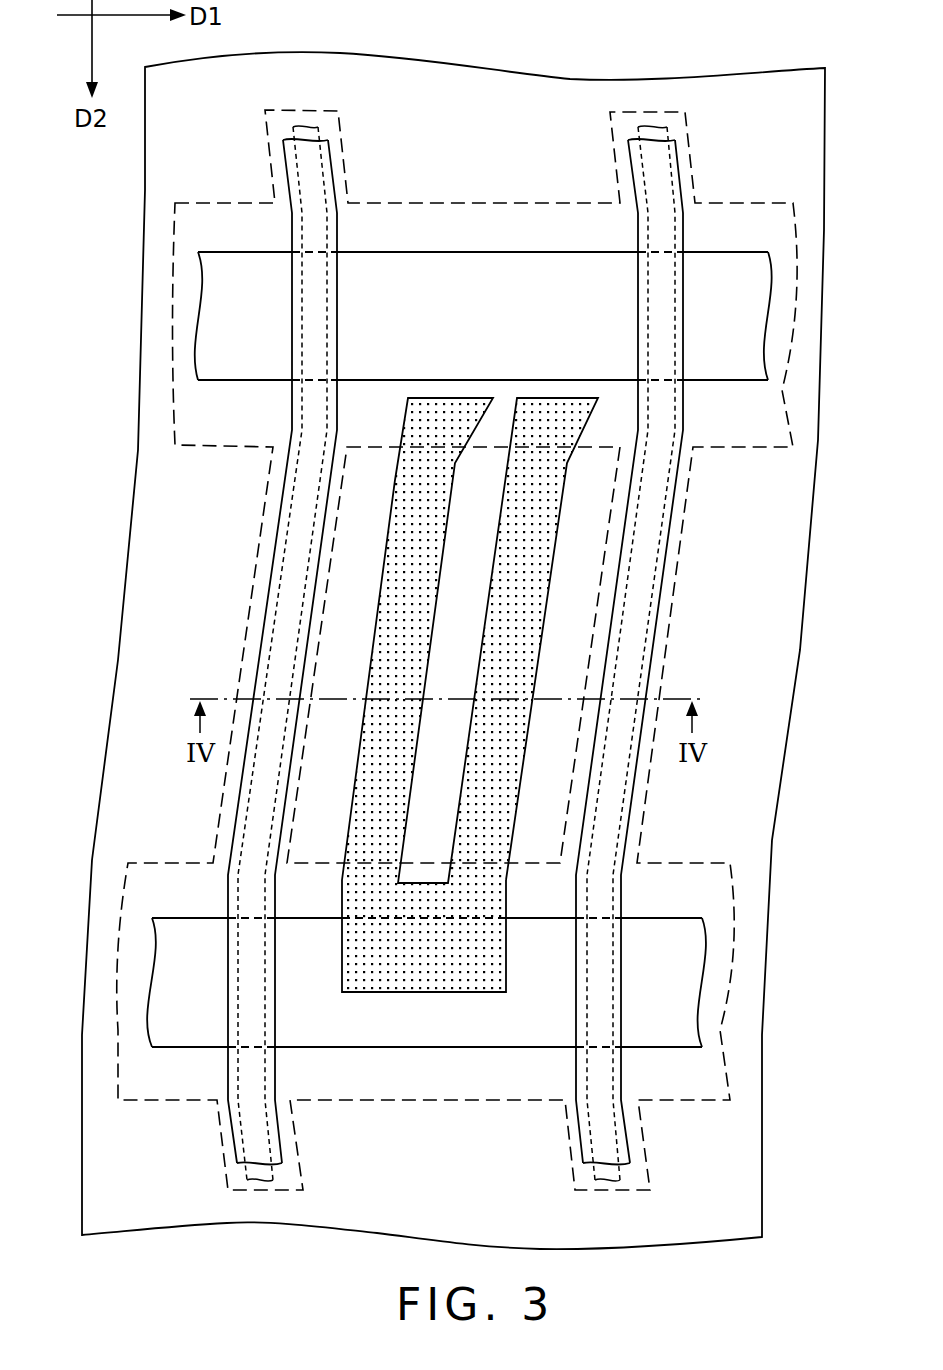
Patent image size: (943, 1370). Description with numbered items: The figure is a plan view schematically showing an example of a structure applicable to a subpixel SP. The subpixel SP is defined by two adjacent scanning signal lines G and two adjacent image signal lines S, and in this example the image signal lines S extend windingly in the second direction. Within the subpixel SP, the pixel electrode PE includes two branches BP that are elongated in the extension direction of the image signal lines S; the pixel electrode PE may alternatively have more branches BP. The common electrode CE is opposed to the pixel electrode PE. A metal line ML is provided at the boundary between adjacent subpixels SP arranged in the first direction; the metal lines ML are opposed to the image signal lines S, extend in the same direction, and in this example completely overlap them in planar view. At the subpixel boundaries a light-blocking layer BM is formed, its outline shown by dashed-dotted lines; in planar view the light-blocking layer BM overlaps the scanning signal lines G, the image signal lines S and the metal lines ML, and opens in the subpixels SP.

The common electrode CE is at (573, 78).
The image signal line S is at (307, 130).
The subpixel SP is at (502, 362).
The scanning signal line G is at (216, 316).
The light-blocking layer BM is at (265, 517).
The branch BP is at (420, 563).
The pixel electrode PE is at (437, 980).
The metal line ML is at (237, 1150).